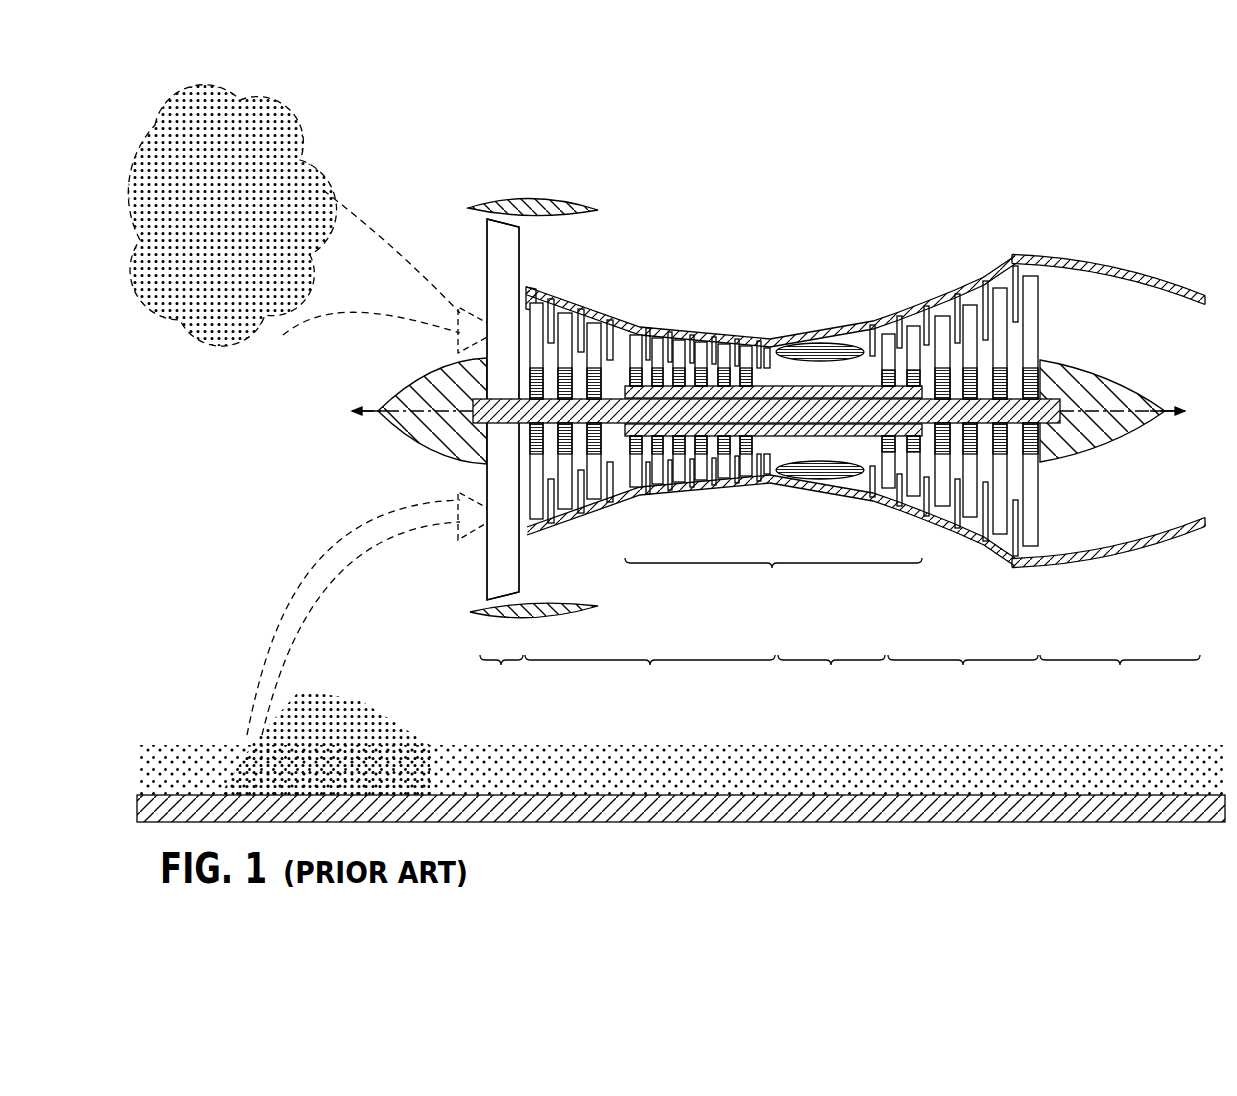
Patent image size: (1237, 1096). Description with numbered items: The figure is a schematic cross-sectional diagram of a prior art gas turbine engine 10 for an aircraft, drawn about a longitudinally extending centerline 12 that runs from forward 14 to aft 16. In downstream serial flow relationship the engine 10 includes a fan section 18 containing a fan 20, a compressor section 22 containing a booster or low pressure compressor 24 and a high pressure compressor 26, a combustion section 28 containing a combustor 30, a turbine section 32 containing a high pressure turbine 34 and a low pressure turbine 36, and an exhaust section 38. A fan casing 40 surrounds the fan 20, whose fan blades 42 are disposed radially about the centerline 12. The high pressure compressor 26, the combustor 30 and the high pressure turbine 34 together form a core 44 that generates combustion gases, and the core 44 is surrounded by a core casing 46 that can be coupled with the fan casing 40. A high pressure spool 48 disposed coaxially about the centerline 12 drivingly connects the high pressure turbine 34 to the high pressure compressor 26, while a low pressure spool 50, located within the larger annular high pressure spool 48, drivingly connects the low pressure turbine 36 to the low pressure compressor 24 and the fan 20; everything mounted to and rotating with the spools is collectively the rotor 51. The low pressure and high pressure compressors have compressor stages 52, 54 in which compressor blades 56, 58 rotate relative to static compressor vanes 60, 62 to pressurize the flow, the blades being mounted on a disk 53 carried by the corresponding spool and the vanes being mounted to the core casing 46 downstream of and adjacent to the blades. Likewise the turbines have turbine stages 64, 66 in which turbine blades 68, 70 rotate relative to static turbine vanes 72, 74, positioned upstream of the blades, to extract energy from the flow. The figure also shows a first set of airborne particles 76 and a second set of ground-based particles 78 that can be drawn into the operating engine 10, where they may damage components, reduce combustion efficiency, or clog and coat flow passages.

The gas turbine engine 10 is at (717, 197).
The centerline 12 is at (415, 405).
The forward 14 is at (353, 410).
The aft 16 is at (1184, 410).
The fan section 18 is at (501, 670).
The fan 20 is at (485, 254).
The compressor section 22 is at (650, 670).
The low pressure compressor 24 is at (620, 514).
The high pressure compressor 26 is at (714, 470).
The combustion section 28 is at (831, 670).
The combustor 30 is at (858, 343).
The turbine section 32 is at (963, 670).
The high pressure turbine 34 is at (872, 507).
The low pressure turbine 36 is at (959, 542).
The exhaust section 38 is at (1108, 470).
The fan casing 40 is at (533, 196).
The fan blades 42 is at (500, 563).
The core 44 is at (773, 574).
The core casing 46 is at (805, 345).
The high pressure spool 48 is at (752, 368).
The low pressure spool 50 is at (613, 395).
The rotor 51 is at (719, 386).
The compressor stages 52 is at (528, 288).
The disk 53 is at (973, 368).
The compressor stages 54 is at (637, 305).
The compressor blades 56 is at (553, 325).
The compressor blades 58 is at (652, 350).
The static compressor vanes 60 is at (584, 335).
The static compressor vanes 62 is at (661, 350).
The turbine stages 64 is at (893, 300).
The turbine stages 66 is at (983, 266).
The turbine blades 68 is at (915, 342).
The turbine blades 70 is at (1002, 305).
The static turbine vanes 72 is at (903, 332).
The static turbine vanes 74 is at (990, 290).
The airborne particles 76 is at (262, 345).
The ground-based particles 78 is at (267, 692).